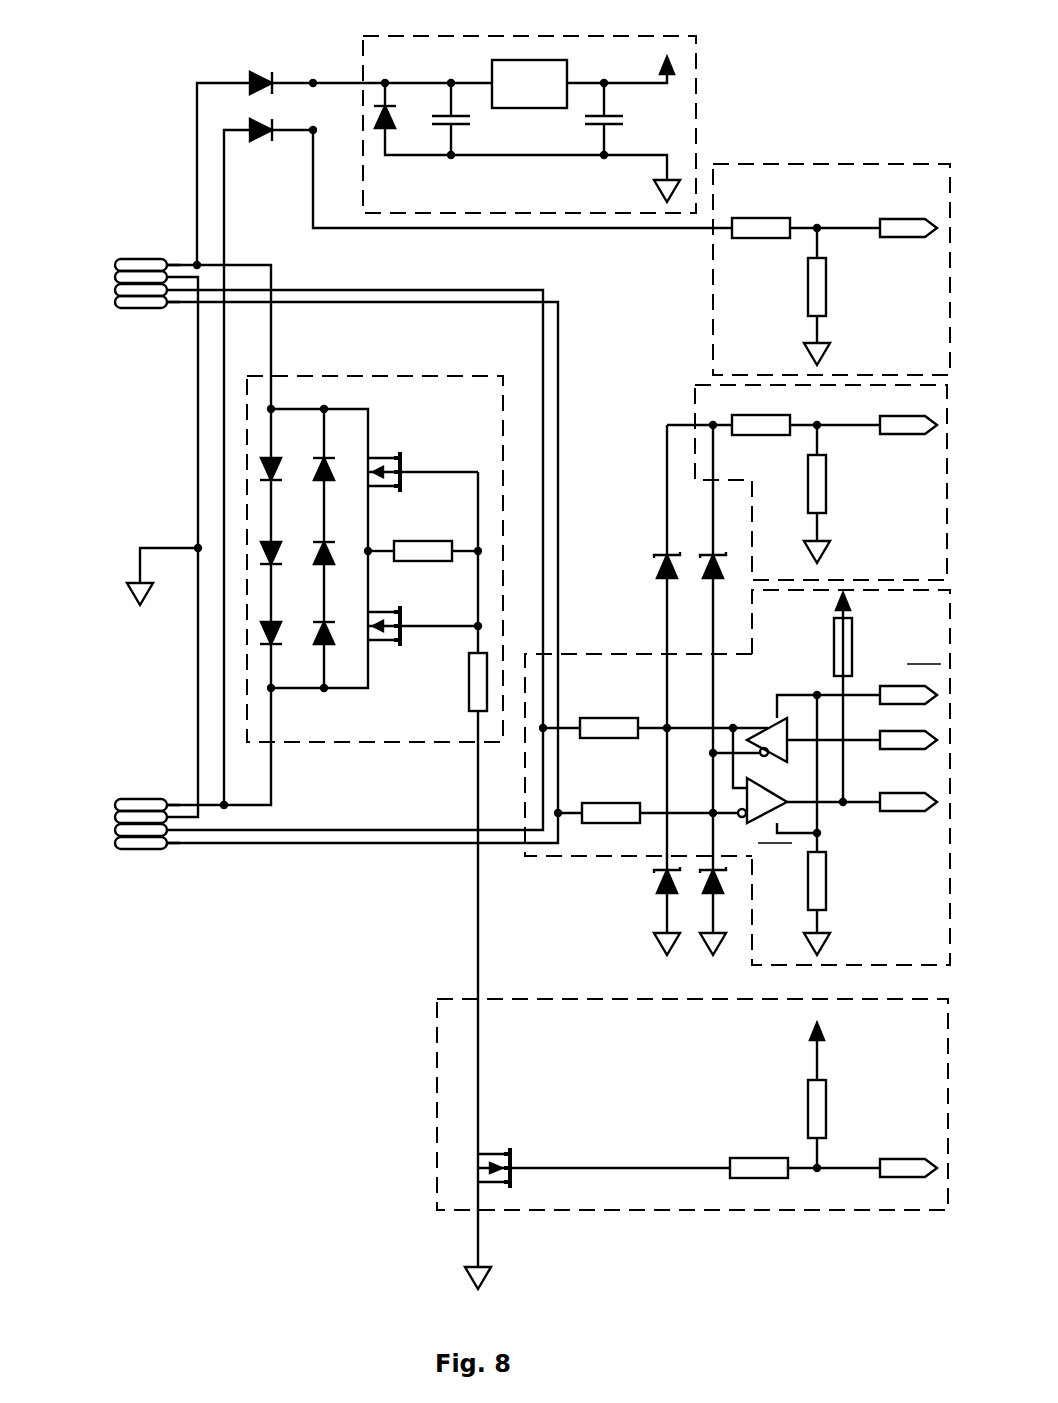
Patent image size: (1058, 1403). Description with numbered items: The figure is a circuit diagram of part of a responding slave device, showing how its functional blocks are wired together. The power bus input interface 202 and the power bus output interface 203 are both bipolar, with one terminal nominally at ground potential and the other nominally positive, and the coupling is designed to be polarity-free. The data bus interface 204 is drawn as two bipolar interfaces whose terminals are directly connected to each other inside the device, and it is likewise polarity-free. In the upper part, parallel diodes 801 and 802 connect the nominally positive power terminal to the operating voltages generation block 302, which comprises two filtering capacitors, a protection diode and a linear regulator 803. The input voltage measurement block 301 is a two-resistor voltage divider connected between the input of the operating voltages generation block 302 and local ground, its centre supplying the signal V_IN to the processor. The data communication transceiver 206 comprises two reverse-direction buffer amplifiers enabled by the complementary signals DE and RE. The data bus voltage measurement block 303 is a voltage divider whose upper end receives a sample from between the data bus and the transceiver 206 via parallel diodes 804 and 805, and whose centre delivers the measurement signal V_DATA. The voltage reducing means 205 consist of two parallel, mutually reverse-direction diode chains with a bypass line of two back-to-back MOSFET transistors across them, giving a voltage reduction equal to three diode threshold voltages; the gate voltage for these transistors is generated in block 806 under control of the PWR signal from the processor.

The power bus input interface 202 is at (128, 260).
The power bus output interface 203 is at (128, 800).
The data bus interface 204 is at (140, 308).
The voltage reducing means 205 is at (432, 376).
The data communication transceiver 206 is at (610, 655).
The input voltage measurement block 301 is at (713, 318).
The operating voltages generation block 302 is at (688, 38).
The data bus voltage measurement block 303 is at (697, 403).
The diode 801 is at (258, 76).
The diode 802 is at (256, 142).
The linear regulator 803 is at (528, 60).
The diode 804 is at (664, 573).
The diode 805 is at (708, 560).
The gate voltage generation block 806 is at (622, 1000).